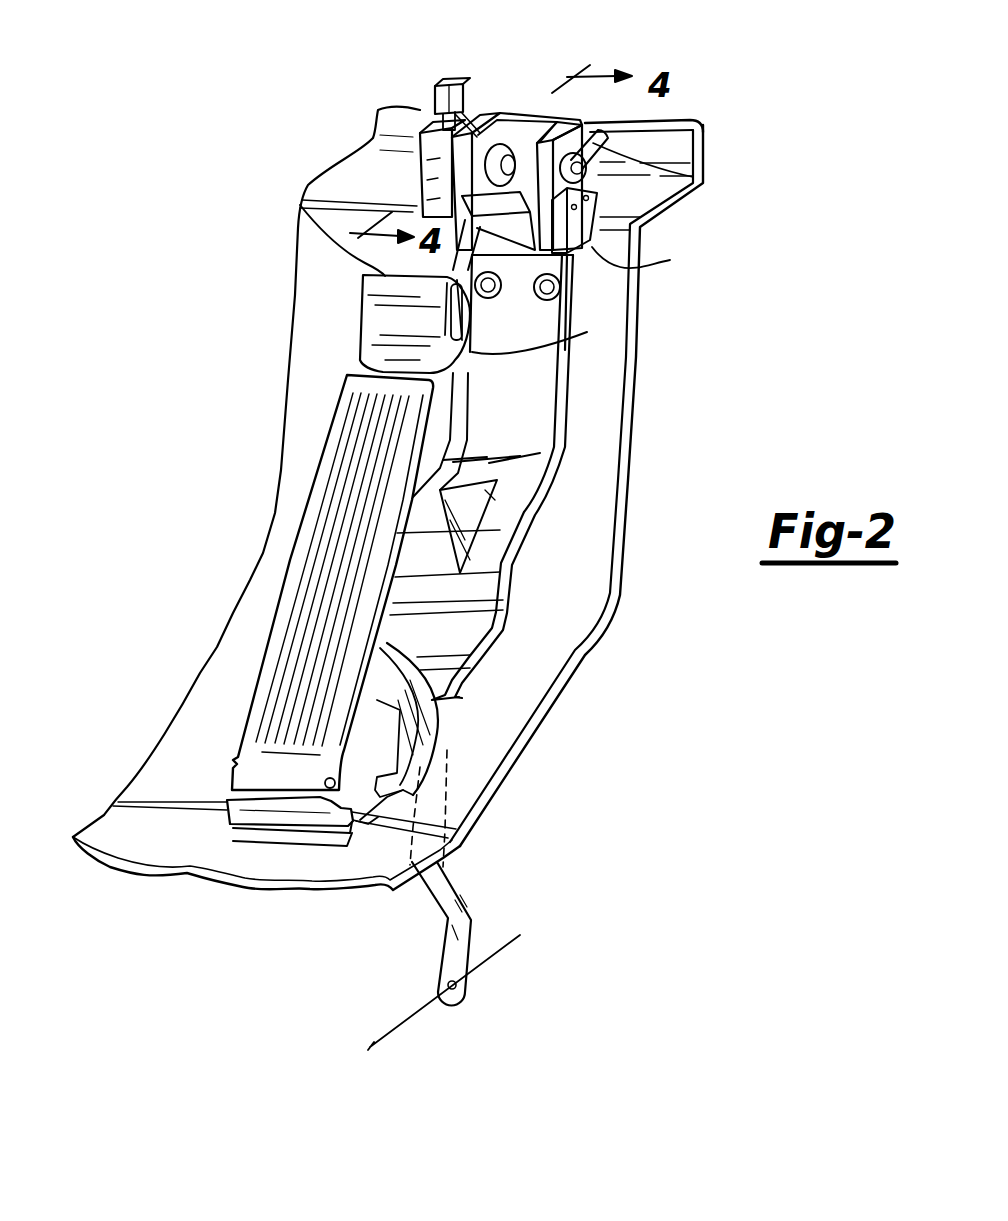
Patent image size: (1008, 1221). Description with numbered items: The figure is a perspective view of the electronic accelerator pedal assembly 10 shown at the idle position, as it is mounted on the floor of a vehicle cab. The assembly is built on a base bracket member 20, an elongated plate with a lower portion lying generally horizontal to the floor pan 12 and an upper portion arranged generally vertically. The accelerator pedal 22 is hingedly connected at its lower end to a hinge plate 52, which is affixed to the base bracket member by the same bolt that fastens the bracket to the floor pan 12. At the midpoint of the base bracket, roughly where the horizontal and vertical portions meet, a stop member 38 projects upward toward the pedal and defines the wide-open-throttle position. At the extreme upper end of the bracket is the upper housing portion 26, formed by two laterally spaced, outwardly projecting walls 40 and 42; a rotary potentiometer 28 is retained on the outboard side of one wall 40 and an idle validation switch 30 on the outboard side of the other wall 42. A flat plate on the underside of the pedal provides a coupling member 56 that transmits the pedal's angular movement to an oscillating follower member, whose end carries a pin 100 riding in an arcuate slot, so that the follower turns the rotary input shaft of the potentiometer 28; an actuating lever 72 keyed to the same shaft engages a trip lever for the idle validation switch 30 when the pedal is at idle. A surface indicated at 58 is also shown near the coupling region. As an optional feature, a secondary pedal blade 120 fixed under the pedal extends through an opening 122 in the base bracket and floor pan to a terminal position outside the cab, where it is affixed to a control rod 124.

The accelerator pedal assembly 10 is at (350, 417).
The floor pan 12 is at (457, 677).
The base bracket member 20 is at (557, 447).
The accelerator pedal 22 is at (267, 638).
The upper housing portion 26 is at (515, 112).
The potentiometer 28 is at (417, 178).
The idle validation switch 30 is at (670, 260).
The stop member 38 is at (465, 518).
The wall 40 is at (478, 115).
The wall 42 is at (580, 120).
The hinge plate 52 is at (227, 807).
The coupling member 56 is at (360, 317).
The cover surface 58 is at (300, 205).
The actuating lever 72 is at (637, 182).
The pin 100 is at (587, 332).
The secondary pedal blade 120 is at (453, 882).
The opening 122 is at (447, 733).
The control rod 124 is at (393, 1027).